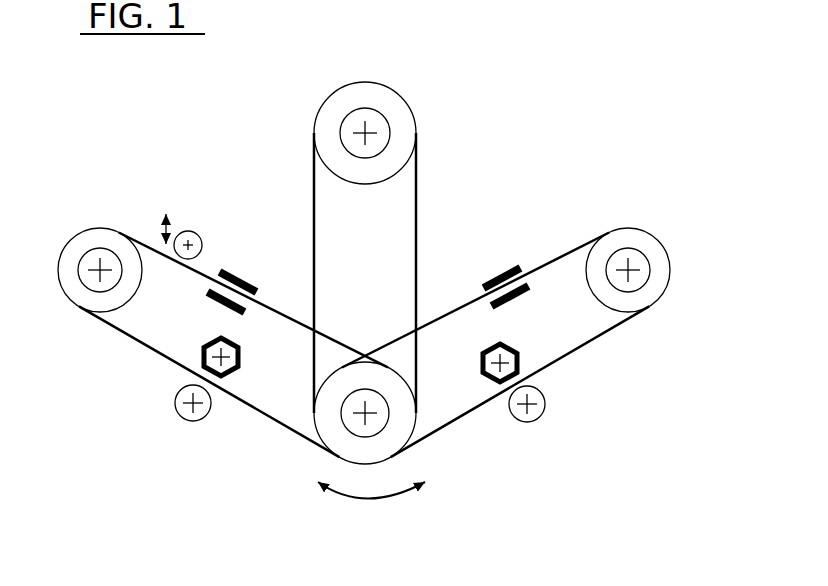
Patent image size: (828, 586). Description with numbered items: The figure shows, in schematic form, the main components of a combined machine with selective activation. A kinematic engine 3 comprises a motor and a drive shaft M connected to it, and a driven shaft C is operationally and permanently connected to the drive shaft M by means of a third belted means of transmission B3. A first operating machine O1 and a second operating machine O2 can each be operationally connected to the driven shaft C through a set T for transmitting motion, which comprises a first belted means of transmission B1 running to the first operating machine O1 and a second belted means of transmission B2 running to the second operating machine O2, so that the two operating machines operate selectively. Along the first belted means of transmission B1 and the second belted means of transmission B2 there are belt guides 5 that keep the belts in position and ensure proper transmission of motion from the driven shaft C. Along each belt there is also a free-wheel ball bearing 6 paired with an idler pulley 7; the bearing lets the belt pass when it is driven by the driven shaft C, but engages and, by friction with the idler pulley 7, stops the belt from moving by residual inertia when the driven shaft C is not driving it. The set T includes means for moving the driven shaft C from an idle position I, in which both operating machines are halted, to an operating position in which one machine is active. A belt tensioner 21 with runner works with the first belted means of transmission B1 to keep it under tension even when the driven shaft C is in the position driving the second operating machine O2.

The drive shaft M is at (372, 131).
The driven shaft C is at (356, 422).
The third belted means of transmission B3 is at (417, 245).
The first operating machine O1 is at (68, 228).
The second operating machine O2 is at (666, 236).
The first belted means of transmission B1 is at (146, 345).
The second belted means of transmission B2 is at (581, 346).
The kinematic engine 3 is at (440, 178).
The belt tensioner 21 is at (197, 236).
The belt guides 5 is at (247, 275).
The free-wheel ball bearing 6 is at (233, 378).
The idler pulley 7 is at (195, 422).
The idle position I is at (371, 518).
The set for transmitting motion T is at (424, 448).